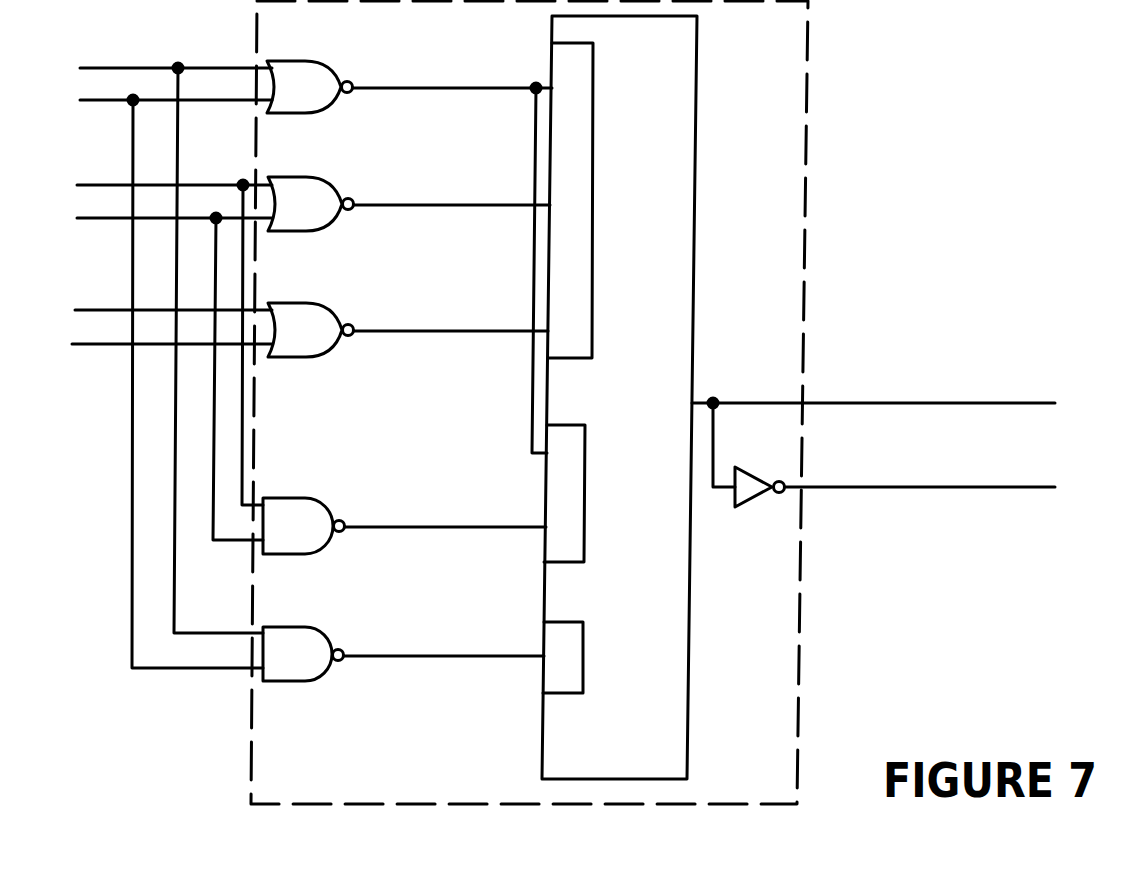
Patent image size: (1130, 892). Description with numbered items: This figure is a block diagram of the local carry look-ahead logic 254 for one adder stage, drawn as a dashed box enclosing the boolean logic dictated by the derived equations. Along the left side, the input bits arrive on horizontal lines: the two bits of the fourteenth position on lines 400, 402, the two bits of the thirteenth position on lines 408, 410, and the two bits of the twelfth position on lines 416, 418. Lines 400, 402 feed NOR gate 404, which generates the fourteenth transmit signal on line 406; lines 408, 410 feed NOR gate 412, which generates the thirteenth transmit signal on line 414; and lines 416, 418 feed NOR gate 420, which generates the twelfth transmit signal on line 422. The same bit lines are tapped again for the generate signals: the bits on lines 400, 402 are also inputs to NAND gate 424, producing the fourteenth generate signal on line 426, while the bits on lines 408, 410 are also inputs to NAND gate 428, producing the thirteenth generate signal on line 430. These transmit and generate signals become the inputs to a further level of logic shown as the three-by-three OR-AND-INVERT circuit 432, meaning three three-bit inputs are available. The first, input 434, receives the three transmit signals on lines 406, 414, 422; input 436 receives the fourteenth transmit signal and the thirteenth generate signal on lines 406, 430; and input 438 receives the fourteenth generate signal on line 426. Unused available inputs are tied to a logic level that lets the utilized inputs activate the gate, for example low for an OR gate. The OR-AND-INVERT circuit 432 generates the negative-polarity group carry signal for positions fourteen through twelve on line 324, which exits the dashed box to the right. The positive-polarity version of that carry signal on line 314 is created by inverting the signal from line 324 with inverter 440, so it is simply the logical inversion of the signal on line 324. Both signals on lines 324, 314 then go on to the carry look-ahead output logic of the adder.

The local carry look-ahead logic 254 is at (807, 171).
The line 400 is at (112, 68).
The line 402 is at (117, 102).
The NOR gate 404 is at (295, 61).
The line 406 is at (528, 90).
The line 408 is at (118, 185).
The line 410 is at (117, 219).
The NOR gate 412 is at (312, 177).
The line 414 is at (518, 208).
The line 416 is at (115, 310).
The line 418 is at (117, 345).
The NOR gate 420 is at (305, 303).
The line 422 is at (510, 334).
The NAND gate 424 is at (305, 627).
The line 426 is at (513, 660).
The NAND gate 428 is at (300, 498).
The line 430 is at (513, 530).
The OR-AND-INVERT circuit 432 is at (697, 83).
The input 434 is at (593, 194).
The input 436 is at (585, 491).
The input 438 is at (583, 662).
The inverter 440 is at (752, 506).
The line 324 is at (960, 404).
The line 314 is at (960, 489).